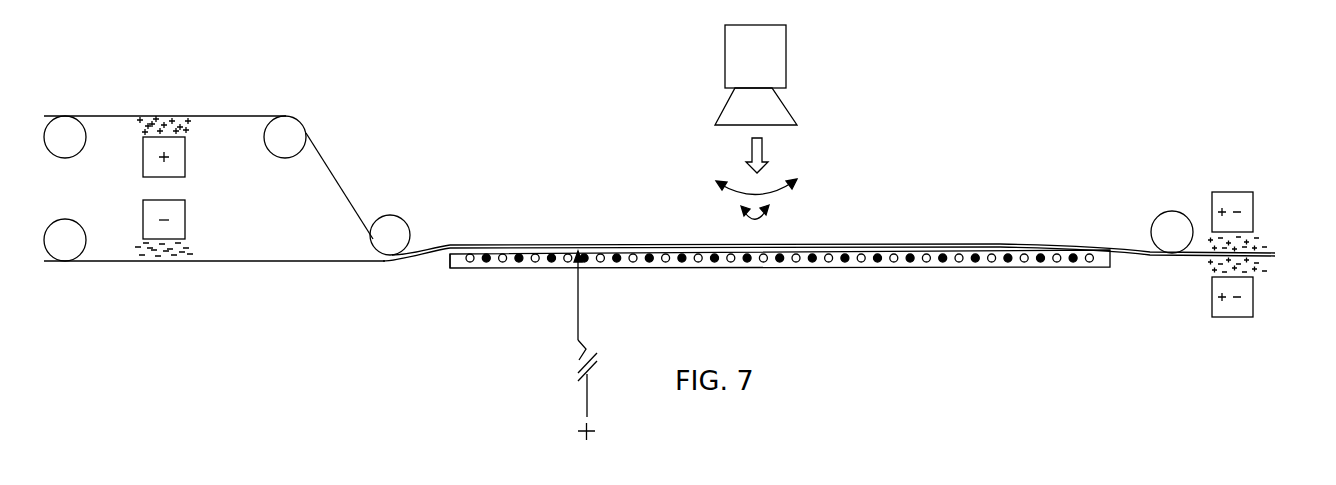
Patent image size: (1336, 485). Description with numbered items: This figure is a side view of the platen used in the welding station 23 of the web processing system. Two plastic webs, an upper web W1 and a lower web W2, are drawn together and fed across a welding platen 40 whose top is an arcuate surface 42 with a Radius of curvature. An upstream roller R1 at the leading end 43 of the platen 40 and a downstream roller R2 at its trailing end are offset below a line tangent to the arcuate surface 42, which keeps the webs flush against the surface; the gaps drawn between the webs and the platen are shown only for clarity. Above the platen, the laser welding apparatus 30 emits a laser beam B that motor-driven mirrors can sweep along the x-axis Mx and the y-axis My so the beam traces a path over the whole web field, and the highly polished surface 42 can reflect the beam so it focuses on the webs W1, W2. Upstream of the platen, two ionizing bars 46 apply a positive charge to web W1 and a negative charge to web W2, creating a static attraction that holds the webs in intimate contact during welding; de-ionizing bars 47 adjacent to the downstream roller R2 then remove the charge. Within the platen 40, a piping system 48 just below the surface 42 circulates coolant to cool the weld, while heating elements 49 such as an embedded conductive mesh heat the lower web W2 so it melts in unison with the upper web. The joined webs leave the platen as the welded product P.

The upper web W1 is at (230, 116).
The lower web W2 is at (243, 261).
The ionizing bars 46 is at (185, 137).
The upstream roller R1 is at (388, 233).
The arcuate surface 42 is at (918, 248).
The platen 40 is at (778, 268).
The end of the platen 43 is at (450, 268).
The heating elements 49 is at (682, 262).
The piping system 48 is at (893, 262).
The radius of curvature Radius is at (577, 336).
The laser welding apparatus 30 is at (725, 65).
The laser beam B is at (749, 161).
The x-axis beam movement Mx is at (740, 196).
The y-axis beam movement My is at (742, 222).
The welding station 23 is at (884, 161).
The downstream roller R2 is at (1172, 232).
The de-ionizing bars 47 is at (1253, 232).
The welded product P is at (1268, 250).